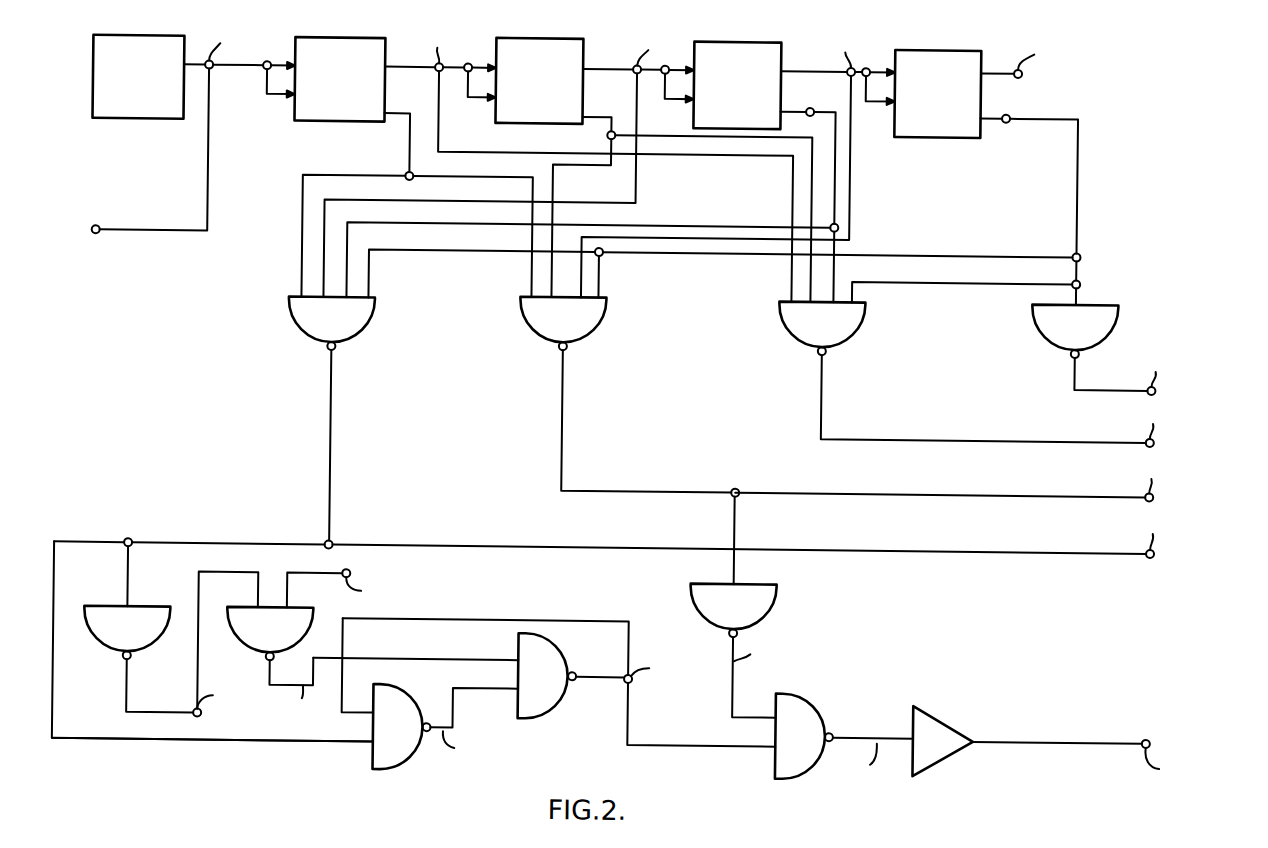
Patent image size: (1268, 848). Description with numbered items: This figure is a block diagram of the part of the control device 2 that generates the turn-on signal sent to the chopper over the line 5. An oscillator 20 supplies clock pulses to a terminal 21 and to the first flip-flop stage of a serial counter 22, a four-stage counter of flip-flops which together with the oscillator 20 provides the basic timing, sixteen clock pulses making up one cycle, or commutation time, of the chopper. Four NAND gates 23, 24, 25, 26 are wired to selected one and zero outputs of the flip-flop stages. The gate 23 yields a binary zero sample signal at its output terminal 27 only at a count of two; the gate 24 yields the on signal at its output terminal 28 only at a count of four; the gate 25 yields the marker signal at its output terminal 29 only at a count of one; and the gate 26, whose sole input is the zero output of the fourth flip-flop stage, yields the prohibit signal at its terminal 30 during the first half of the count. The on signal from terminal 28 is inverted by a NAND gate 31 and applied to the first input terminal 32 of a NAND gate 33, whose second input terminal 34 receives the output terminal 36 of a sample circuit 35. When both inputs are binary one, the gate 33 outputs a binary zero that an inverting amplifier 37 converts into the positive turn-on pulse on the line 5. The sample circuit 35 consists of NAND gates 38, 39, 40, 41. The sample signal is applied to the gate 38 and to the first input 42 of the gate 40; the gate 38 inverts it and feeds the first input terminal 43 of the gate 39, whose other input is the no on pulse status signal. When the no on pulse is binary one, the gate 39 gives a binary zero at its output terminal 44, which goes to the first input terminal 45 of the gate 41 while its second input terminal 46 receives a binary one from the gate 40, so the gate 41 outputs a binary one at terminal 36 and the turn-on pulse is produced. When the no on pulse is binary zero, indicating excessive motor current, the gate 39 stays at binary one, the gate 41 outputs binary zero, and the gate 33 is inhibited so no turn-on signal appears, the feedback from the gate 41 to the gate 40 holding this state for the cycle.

The control device 2 is at (651, 398).
The line 5 is at (1084, 742).
The oscillator 20 is at (151, 41).
The terminal 21 is at (91, 240).
The serial counter 22 is at (611, 30).
The NAND gate 23 is at (293, 330).
The NAND gate 24 is at (527, 323).
The NAND gate 25 is at (786, 329).
The NAND gate 26 is at (1043, 331).
The output terminal 27 is at (331, 368).
The output terminal 28 is at (563, 368).
The output terminal 29 is at (821, 363).
The output terminal 30 is at (1074, 363).
The NAND gate 31 is at (772, 606).
The first input terminal 32 is at (752, 716).
The NAND gate 33 is at (813, 705).
The second input terminal 34 is at (751, 748).
The sample circuit 35 is at (235, 784).
The output terminal 36 is at (631, 697).
The inverting amplifier 37 is at (950, 696).
The NAND gate 38 is at (102, 654).
The NAND gate 39 is at (251, 653).
The NAND gate 40 is at (413, 701).
The NAND gate 41 is at (570, 658).
The first input 42 is at (361, 748).
The first input terminal 43 is at (260, 595).
The output terminal 44 is at (279, 689).
The first input terminal 45 is at (472, 660).
The second input terminal 46 is at (496, 692).